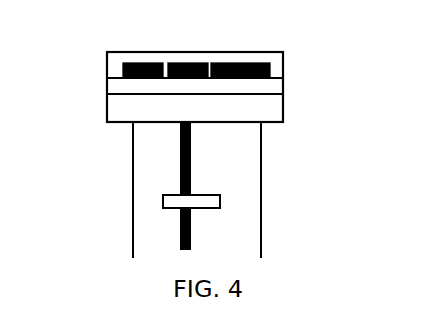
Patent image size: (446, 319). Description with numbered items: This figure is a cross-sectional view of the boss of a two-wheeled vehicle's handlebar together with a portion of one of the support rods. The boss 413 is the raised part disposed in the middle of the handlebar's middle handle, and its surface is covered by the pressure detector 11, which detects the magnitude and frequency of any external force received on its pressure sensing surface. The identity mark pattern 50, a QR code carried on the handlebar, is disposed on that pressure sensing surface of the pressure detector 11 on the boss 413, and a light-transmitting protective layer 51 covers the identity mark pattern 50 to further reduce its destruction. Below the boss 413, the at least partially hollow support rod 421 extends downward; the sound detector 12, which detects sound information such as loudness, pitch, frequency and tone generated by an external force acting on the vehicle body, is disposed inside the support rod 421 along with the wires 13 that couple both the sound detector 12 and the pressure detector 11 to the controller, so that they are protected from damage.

The protective layer 51 is at (283, 52).
The identity mark pattern 50 is at (124, 72).
The pressure detector 11 is at (107, 87).
The boss 413 is at (283, 107).
The support rod 421 is at (261, 182).
The wires 13 is at (182, 232).
The sound detector 12 is at (163, 208).